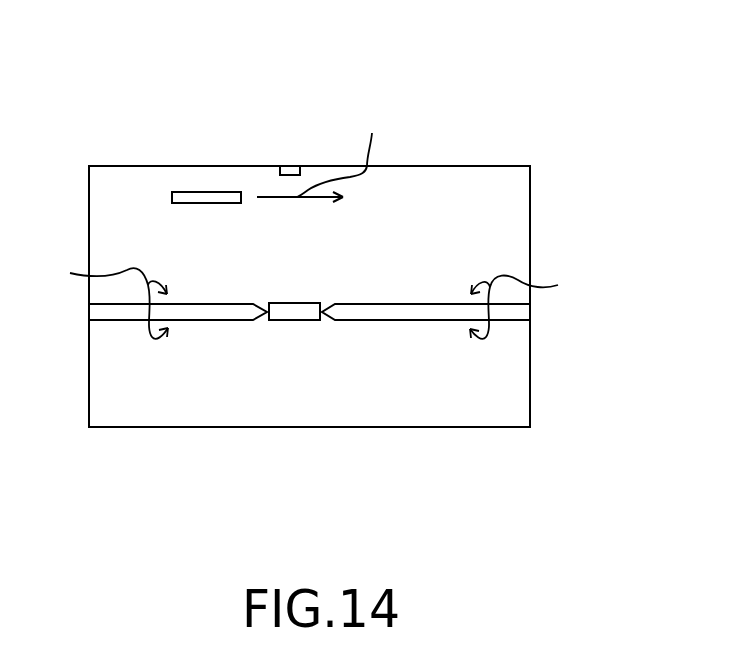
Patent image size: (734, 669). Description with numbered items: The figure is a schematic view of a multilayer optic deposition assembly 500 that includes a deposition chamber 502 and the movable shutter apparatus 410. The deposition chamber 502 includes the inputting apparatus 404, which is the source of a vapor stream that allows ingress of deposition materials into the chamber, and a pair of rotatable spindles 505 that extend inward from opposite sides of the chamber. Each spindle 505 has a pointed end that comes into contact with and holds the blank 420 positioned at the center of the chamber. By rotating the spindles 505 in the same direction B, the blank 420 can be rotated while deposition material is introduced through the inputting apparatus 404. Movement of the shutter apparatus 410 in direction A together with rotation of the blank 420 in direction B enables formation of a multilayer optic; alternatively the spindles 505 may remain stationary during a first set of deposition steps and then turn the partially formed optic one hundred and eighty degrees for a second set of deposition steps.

The multilayer optic deposition assembly 500 is at (590, 87).
The deposition chamber 502 is at (495, 183).
The inputting apparatus 404 is at (285, 166).
The movable shutter apparatus 410 is at (205, 192).
The rotatable spindles 505 is at (377, 312).
The blank 420 is at (295, 310).